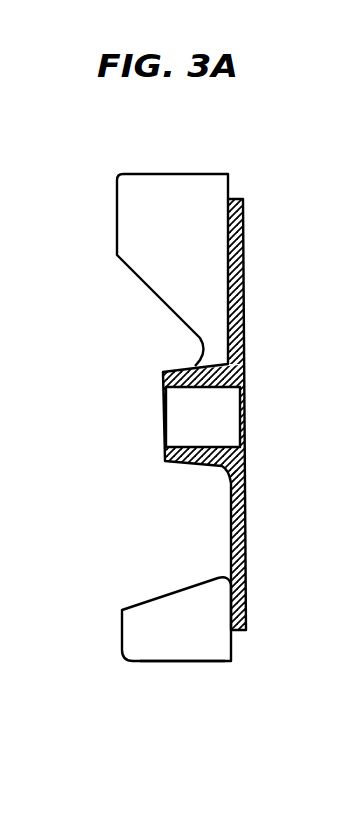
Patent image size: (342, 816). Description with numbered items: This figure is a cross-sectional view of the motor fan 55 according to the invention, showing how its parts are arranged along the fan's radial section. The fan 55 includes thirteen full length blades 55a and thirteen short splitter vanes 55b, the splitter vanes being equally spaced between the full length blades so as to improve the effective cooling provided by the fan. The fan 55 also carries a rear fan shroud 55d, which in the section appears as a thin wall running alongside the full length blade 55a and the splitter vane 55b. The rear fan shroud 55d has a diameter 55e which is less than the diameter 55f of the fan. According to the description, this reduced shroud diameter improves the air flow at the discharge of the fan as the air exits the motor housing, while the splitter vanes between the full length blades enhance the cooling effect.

The fan 55 is at (192, 438).
The full length blades 55a is at (117, 217).
The short (splitter) vanes 55b is at (135, 620).
The rear fan shroud 55d is at (246, 500).
The diameter 55e is at (163, 380).
The diameter 55f is at (192, 661).